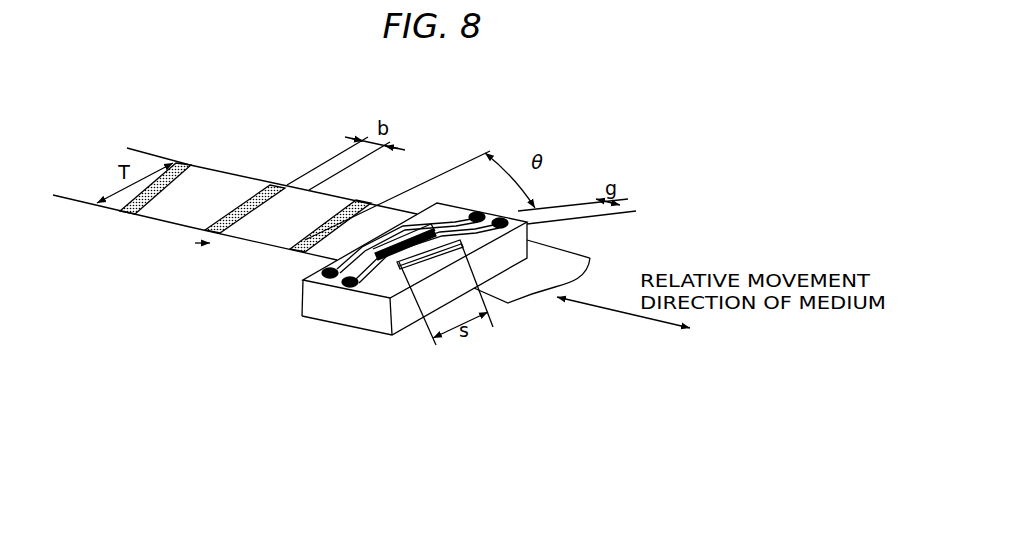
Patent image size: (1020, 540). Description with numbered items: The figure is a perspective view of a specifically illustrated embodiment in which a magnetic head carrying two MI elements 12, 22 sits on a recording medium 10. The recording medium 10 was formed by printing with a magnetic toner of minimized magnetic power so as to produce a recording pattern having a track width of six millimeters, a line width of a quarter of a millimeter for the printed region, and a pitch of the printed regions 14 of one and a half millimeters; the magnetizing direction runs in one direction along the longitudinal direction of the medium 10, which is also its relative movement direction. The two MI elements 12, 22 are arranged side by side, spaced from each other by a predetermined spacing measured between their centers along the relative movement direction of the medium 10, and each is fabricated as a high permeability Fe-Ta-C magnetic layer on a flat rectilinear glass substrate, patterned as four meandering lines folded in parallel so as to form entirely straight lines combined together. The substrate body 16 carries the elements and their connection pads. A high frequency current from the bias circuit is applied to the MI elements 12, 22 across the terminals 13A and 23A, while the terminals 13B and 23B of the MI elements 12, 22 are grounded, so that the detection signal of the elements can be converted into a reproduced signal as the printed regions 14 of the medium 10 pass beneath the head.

The recording medium 10 is at (227, 178).
The printed region 14 is at (263, 200).
The head substrate 16 is at (310, 300).
The MI element 12 is at (405, 240).
The MI element 22 is at (407, 270).
The terminal 13A is at (327, 284).
The terminal 13B is at (352, 285).
The terminal 23A is at (505, 223).
The terminal 23B is at (474, 214).